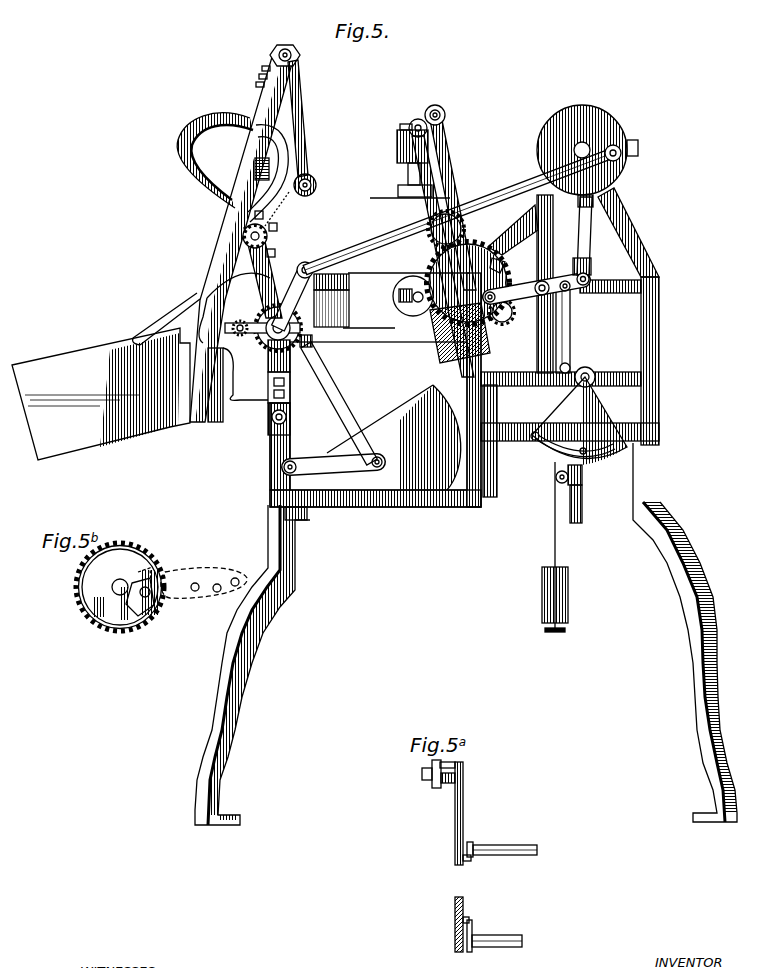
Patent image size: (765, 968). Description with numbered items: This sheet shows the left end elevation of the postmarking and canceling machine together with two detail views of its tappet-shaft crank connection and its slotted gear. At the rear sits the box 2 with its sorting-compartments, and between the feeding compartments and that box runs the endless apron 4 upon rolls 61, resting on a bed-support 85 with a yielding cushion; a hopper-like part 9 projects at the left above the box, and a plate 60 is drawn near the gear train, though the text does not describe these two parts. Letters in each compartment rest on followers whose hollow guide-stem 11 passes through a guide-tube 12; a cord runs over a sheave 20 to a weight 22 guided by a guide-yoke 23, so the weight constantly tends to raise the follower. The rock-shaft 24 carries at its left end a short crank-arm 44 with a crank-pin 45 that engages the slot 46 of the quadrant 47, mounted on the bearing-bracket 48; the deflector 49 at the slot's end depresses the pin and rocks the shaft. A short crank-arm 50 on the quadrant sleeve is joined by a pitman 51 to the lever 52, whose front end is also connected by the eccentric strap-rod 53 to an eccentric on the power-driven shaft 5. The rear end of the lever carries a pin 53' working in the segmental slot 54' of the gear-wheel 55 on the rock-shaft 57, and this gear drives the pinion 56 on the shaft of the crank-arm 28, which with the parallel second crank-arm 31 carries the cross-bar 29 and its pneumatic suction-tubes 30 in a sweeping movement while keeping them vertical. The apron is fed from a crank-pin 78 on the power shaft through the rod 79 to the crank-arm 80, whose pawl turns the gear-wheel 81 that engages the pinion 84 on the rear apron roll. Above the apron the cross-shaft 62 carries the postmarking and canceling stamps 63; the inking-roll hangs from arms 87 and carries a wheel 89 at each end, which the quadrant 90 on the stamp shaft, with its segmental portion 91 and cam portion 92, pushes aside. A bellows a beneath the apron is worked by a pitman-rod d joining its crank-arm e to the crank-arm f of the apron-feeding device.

In FIG. 5, the box 2 is at (101, 394).
In FIG. 5, the endless apron 4 is at (388, 272).
In FIG. 5, the power-driven shaft 5 is at (587, 150).
In FIG. 5, the hopper arm 9 is at (178, 318).
In FIG. 5, the hollow guide-stem 11 is at (587, 504).
In FIG. 5, the guide-tube 12 is at (586, 475).
In FIG. 5, the sheave 20 is at (556, 478).
In FIG. 5, the weight 22 is at (565, 599).
In FIG. 5, the guide-yoke 23 is at (545, 547).
In FIG. 5A, the rock-shaft 24 is at (504, 897).
In FIG. 5, the crank-arm 28 is at (420, 201).
In FIG. 5, the cross-bar 29 is at (403, 143).
In FIG. 5, the pneumatic suction-tubes 30 is at (409, 180).
In FIG. 5, the second crank-arm 31 is at (450, 197).
In FIG. 5A, the short crank-arm 44 is at (471, 843).
In FIG. 5, the crank-pin 45 is at (583, 448).
In FIG. 5A, the crank-pin 45 is at (481, 918).
In FIG. 5, the slot 46 is at (607, 457).
In FIG. 5, the quadrant 47 is at (579, 421).
In FIG. 5A, the quadrant 47 is at (463, 857).
In FIG. 5, the bearing-bracket 48 is at (590, 372).
In FIG. 5A, the bearing-bracket 48 is at (430, 778).
In FIG. 5, the deflector 49 is at (532, 441).
In FIG. 5, the short crank-arm 50 is at (553, 377).
In FIG. 5, the pitman 51 is at (586, 325).
In FIG. 5, the lever 52 is at (534, 292).
In FIG. 5B, the lever 52 is at (198, 576).
In FIG. 5, the eccentric strap-rod 53 is at (592, 240).
In FIG. 5, the pin 53' is at (510, 318).
In FIG. 5B, the segmental slot 54' is at (154, 595).
In FIG. 5, the gear-wheel 55 is at (468, 283).
In FIG. 5B, the gear-wheel 55 is at (118, 579).
In FIG. 5, the pinion 56 is at (435, 235).
In FIG. 5, the rock-shaft 57 is at (510, 264).
In FIG. 5, the plate 60 is at (460, 333).
In FIG. 5, the rolls 61 is at (393, 298).
In FIG. 5, the cross-shaft 62 is at (269, 255).
In FIG. 5, the postmarking and canceling stamps 63 is at (302, 170).
In FIG. 5, the crank-pin 78 is at (621, 160).
In FIG. 5, the rod 79 is at (459, 211).
In FIG. 5, the crank-arm 80 is at (292, 296).
In FIG. 5, the gear-wheel 81 is at (263, 336).
In FIG. 5, the pinion 84 is at (240, 319).
In FIG. 5, the bed-support 85 is at (345, 280).
In FIG. 5, the arms 87 is at (252, 233).
In FIG. 5, the wheel 89 is at (315, 185).
In FIG. 5, the quadrant 90 is at (223, 194).
In FIG. 5, the segmental portion 91 is at (215, 159).
In FIG. 5, the cam portion 92 is at (268, 173).
In FIG. 5, the bellows a is at (394, 437).
In FIG. 5, the pitman-rod d is at (339, 403).
In FIG. 5, the crank-arm e is at (333, 463).
In FIG. 5, the crank-arm f is at (311, 337).